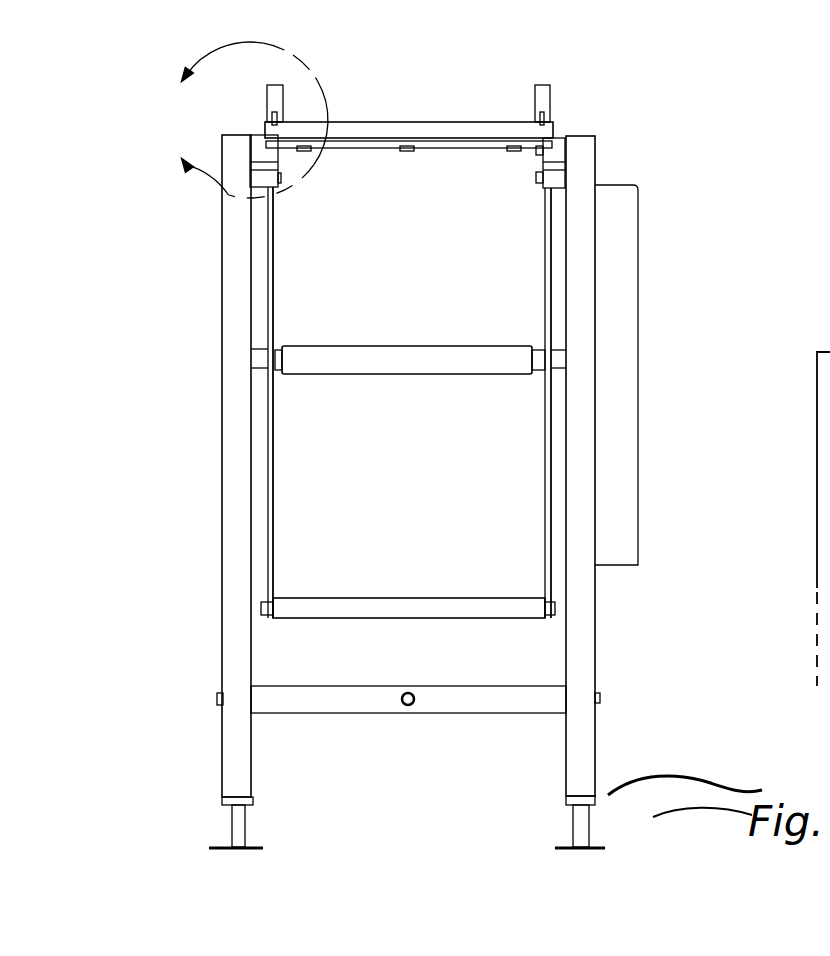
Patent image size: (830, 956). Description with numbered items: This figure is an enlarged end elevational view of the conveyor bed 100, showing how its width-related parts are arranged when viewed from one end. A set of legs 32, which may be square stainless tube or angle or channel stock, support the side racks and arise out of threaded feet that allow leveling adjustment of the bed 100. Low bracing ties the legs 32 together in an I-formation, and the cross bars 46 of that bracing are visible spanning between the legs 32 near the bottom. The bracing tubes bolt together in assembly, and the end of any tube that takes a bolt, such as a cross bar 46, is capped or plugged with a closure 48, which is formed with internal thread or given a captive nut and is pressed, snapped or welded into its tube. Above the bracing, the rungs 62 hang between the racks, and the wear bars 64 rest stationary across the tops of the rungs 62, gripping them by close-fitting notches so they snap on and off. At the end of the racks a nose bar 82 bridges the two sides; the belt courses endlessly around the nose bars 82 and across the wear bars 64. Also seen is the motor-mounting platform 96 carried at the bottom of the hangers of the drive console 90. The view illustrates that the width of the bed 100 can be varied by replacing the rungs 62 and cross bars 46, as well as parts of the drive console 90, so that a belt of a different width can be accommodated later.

The bed 100 is at (587, 98).
The legs 32 is at (235, 768).
The cross bars 46 is at (350, 697).
The closure 48 is at (252, 694).
The rungs 62 is at (358, 148).
The wear bars 64 is at (407, 151).
The nose bars 82 is at (370, 128).
The drive console 90 is at (365, 346).
The motor-mounting platform 96 is at (405, 608).